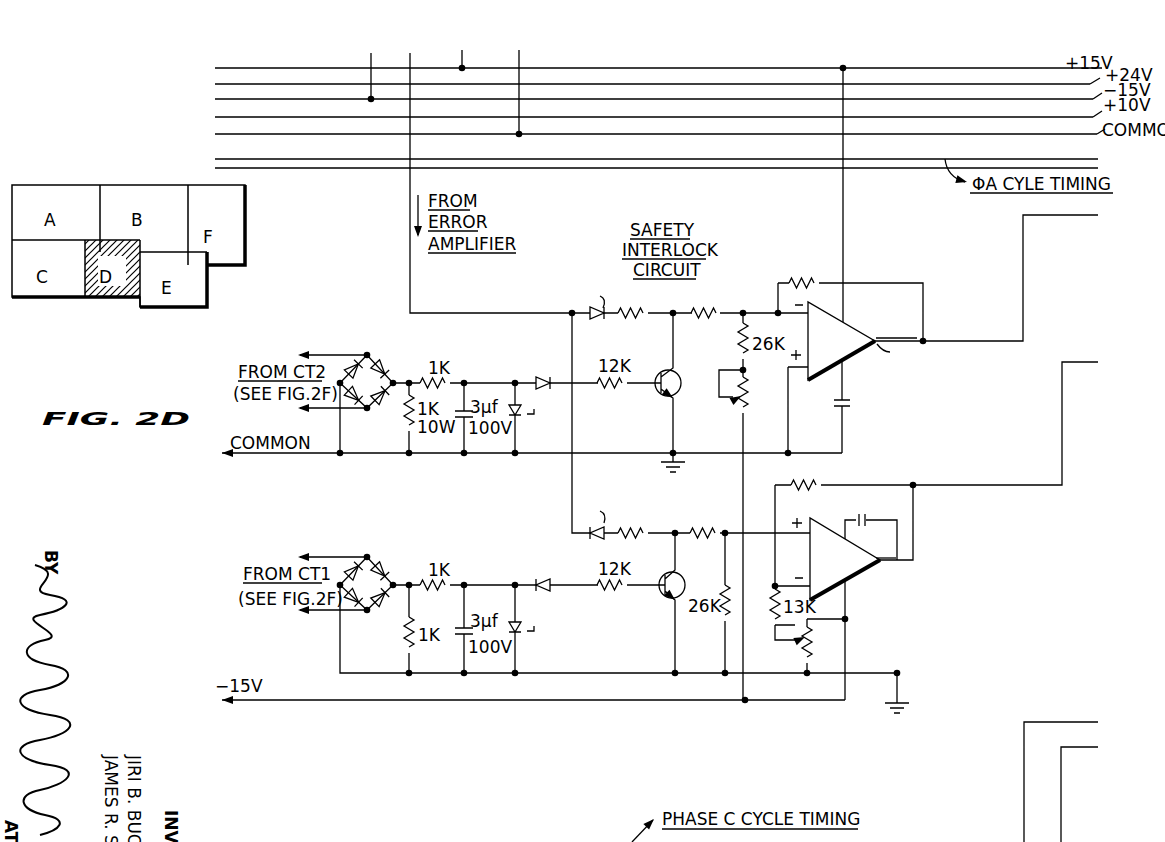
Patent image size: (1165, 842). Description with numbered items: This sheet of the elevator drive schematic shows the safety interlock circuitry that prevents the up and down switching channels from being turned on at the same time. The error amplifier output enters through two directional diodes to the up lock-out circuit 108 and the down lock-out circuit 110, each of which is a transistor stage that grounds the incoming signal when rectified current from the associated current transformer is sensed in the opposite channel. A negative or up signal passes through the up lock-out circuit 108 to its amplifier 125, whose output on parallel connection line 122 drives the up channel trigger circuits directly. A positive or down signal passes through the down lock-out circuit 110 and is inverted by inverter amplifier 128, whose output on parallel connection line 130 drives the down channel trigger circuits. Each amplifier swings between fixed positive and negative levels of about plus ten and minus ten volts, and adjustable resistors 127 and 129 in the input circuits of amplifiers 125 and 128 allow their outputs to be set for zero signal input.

The up safety lock-out circuit 108 is at (550, 550).
The down safety lock-out circuit 110 is at (545, 358).
The parallel connection line 122 is at (977, 485).
The lockout amplifier 125 is at (883, 565).
The adjustable resistor 127 is at (786, 650).
The inverter amplifier 128 is at (830, 314).
The adjustable resistor 129 is at (730, 426).
The parallel connection line 130 is at (987, 340).